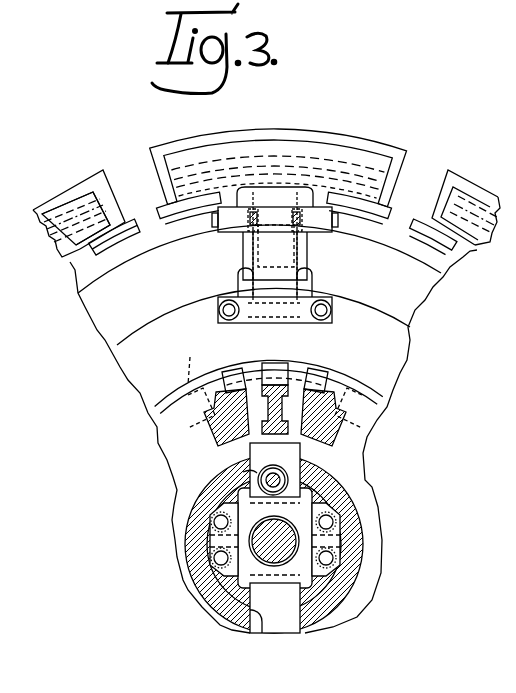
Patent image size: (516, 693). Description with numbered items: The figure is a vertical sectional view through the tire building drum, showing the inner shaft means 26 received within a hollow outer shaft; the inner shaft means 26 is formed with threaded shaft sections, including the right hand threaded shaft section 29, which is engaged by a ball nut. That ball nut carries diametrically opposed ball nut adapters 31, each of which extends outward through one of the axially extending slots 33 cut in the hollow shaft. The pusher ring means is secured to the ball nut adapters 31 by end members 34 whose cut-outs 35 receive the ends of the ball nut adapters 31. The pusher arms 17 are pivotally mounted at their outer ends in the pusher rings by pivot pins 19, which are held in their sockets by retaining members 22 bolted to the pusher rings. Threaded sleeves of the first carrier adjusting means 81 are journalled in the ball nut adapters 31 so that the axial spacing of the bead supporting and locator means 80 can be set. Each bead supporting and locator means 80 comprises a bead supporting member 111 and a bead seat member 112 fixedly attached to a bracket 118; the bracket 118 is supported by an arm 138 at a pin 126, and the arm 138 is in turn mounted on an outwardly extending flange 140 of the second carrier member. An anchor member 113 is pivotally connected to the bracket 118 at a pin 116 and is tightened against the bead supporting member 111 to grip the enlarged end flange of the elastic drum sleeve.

The bead supporting and locator means 80 is at (392, 144).
The bead supporting member 111 is at (155, 148).
The bead seat member 112 is at (157, 188).
The anchor member 113 is at (231, 151).
The pin 116 is at (332, 225).
The bracket 118 is at (249, 263).
The pin 126 is at (308, 318).
The arm 138 is at (278, 324).
The outwardly extending flange 140 is at (393, 350).
The retaining member 22 is at (380, 391).
The pivot pin 19 is at (248, 378).
The pusher arm 17 is at (230, 441).
The first carrier adjusting means 81 is at (245, 473).
The ball nut adapter 31 is at (298, 450).
The axially extending slot 33 is at (308, 493).
The end member 34 is at (317, 512).
The cut-out 35 is at (243, 490).
The inner shaft means 26 is at (300, 538).
The right hand threaded shaft section 29 is at (258, 553).